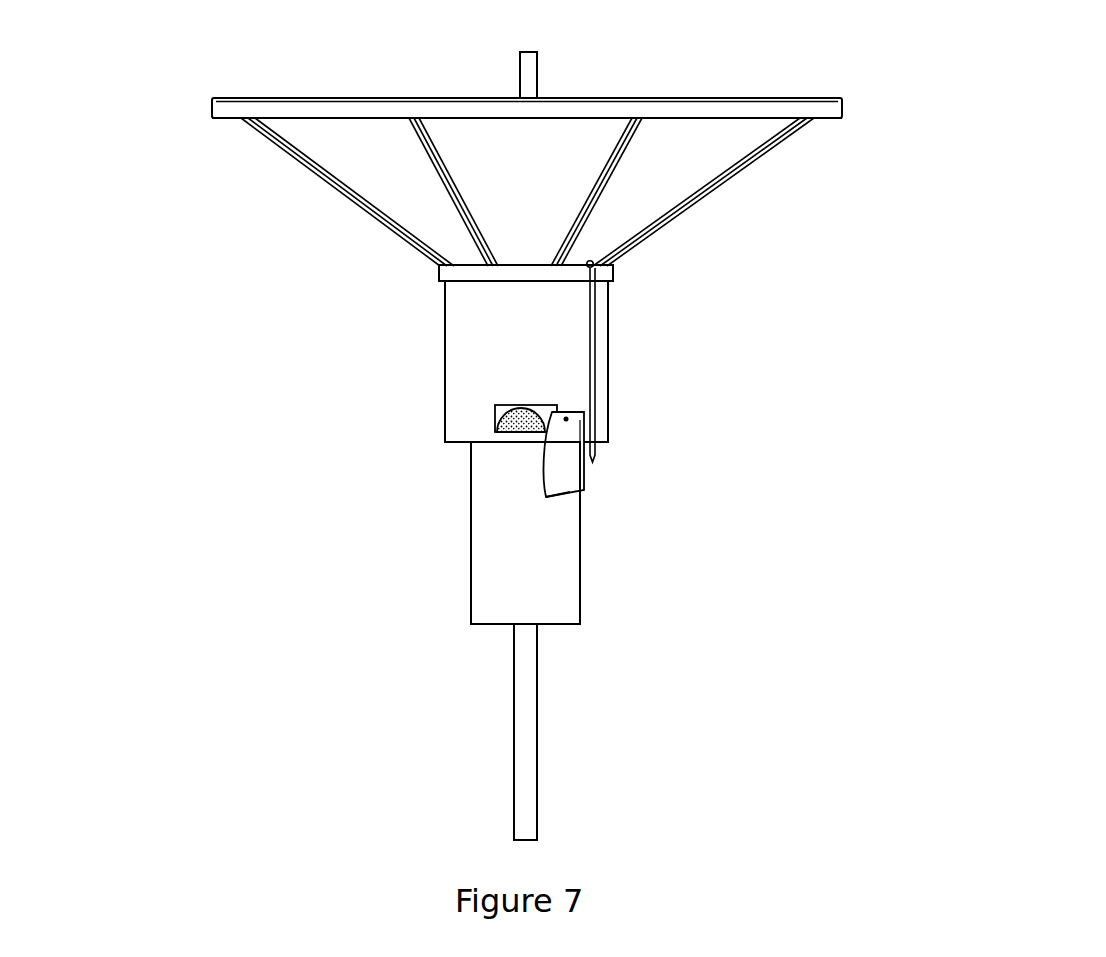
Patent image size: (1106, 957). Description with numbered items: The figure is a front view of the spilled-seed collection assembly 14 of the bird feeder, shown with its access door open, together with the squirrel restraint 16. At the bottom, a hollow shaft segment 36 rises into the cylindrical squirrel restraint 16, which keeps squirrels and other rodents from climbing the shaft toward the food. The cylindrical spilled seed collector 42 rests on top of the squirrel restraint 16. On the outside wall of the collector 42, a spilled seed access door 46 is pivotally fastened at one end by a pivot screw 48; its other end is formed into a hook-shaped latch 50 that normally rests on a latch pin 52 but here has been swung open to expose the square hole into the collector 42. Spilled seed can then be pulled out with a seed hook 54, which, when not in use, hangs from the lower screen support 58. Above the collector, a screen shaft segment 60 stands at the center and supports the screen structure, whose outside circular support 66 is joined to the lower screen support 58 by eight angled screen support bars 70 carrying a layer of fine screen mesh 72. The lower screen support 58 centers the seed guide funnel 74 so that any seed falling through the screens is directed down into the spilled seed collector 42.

The spilled-seed collection assembly 14 is at (383, 298).
The squirrel restraint 16 is at (493, 553).
The shaft segment 36 is at (523, 725).
The spilled seed collector 42 is at (492, 347).
The spilled seed access door 46 is at (570, 463).
The pivot screw 48 is at (570, 420).
The hook-shaped latch 50 is at (568, 496).
The latch pin 52 is at (490, 417).
The seed hook 54 is at (593, 327).
The lower screen support 58 is at (613, 278).
The screen shaft segment 60 is at (538, 70).
The outside circular support 66 is at (848, 108).
The angled screen support bars 70 is at (302, 158).
The fine screen mesh 72 is at (652, 190).
The seed guide funnel 74 is at (772, 190).